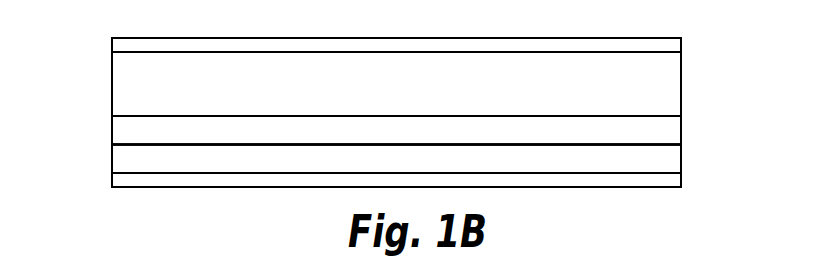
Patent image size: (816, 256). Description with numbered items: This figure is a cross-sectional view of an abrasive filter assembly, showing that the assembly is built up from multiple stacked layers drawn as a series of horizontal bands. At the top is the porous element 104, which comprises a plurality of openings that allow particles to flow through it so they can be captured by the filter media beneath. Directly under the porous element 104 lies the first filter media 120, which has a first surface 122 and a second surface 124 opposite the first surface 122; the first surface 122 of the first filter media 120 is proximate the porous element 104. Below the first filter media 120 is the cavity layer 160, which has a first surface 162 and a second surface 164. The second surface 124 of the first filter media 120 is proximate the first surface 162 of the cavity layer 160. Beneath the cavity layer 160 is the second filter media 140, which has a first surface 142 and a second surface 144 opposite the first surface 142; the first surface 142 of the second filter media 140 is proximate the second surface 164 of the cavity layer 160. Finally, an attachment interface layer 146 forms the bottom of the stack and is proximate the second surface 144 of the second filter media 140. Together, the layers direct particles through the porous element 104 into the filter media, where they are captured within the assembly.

The porous element 104 is at (676, 45).
The first filter media 120 is at (676, 82).
The cavity layer 160 is at (676, 132).
The second filter media 140 is at (676, 160).
The attachment interface layer 146 is at (676, 183).
The first surface 122 is at (150, 50).
The first surface 162 is at (147, 115).
The second surface 124 is at (140, 117).
The first surface 142 is at (128, 145).
The second surface 144 is at (125, 175).
The second surface 164 is at (153, 144).